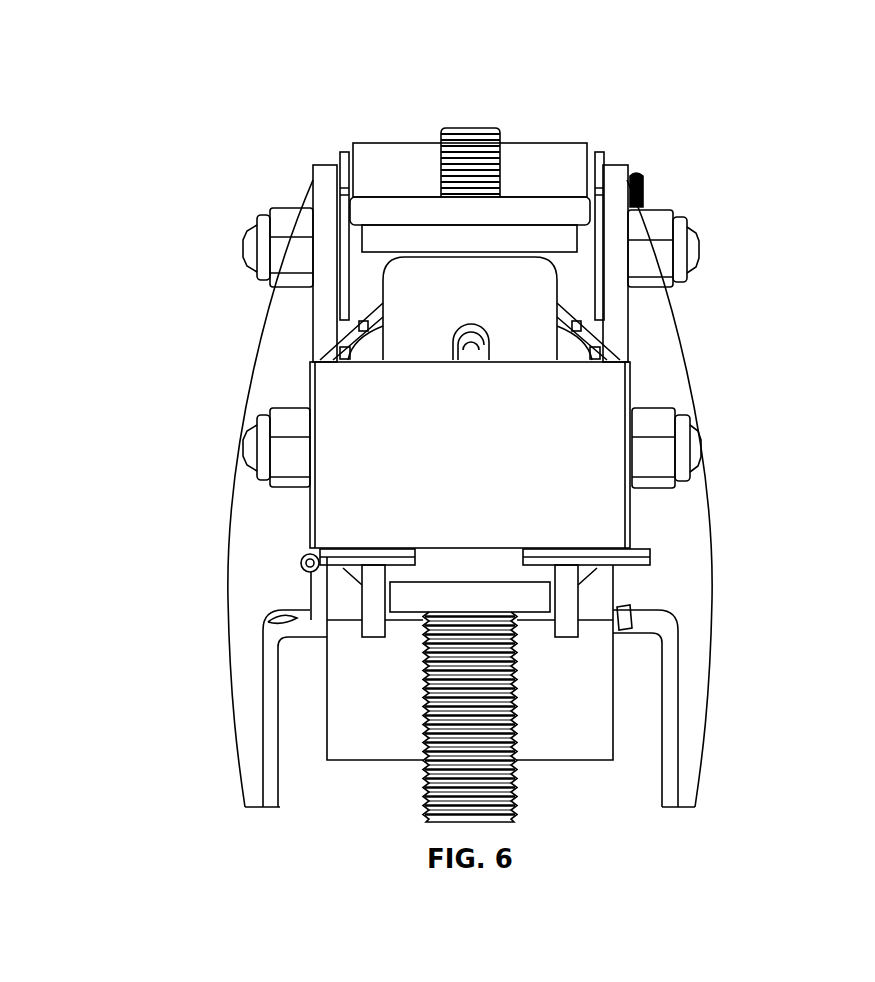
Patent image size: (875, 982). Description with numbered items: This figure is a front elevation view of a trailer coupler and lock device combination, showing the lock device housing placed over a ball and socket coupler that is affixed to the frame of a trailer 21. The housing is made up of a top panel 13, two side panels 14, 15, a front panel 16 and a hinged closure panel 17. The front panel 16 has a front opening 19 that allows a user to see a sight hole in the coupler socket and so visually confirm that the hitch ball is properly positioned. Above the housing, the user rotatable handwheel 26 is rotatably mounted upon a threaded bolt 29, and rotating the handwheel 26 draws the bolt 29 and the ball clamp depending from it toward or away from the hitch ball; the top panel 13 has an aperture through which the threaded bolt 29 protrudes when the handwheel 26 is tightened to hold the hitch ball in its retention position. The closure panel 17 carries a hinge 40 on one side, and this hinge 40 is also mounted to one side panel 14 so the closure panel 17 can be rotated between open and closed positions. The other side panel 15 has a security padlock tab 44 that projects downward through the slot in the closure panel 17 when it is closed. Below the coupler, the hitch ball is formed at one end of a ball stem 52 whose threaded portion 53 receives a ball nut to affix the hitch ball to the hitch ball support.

The top panel 13 is at (552, 200).
The side panel 14 is at (353, 235).
The side panel 15 is at (586, 272).
The front panel 16 is at (480, 456).
The hinged closure panel 17 is at (342, 563).
The front opening 19 is at (366, 276).
The trailer 21 is at (253, 553).
The handwheel 26 is at (418, 235).
The threaded bolt 29 is at (480, 128).
The hinge 40 is at (301, 570).
The security padlock tab 44 is at (632, 578).
The ball stem 52 is at (484, 568).
The threaded portion 53 is at (518, 713).